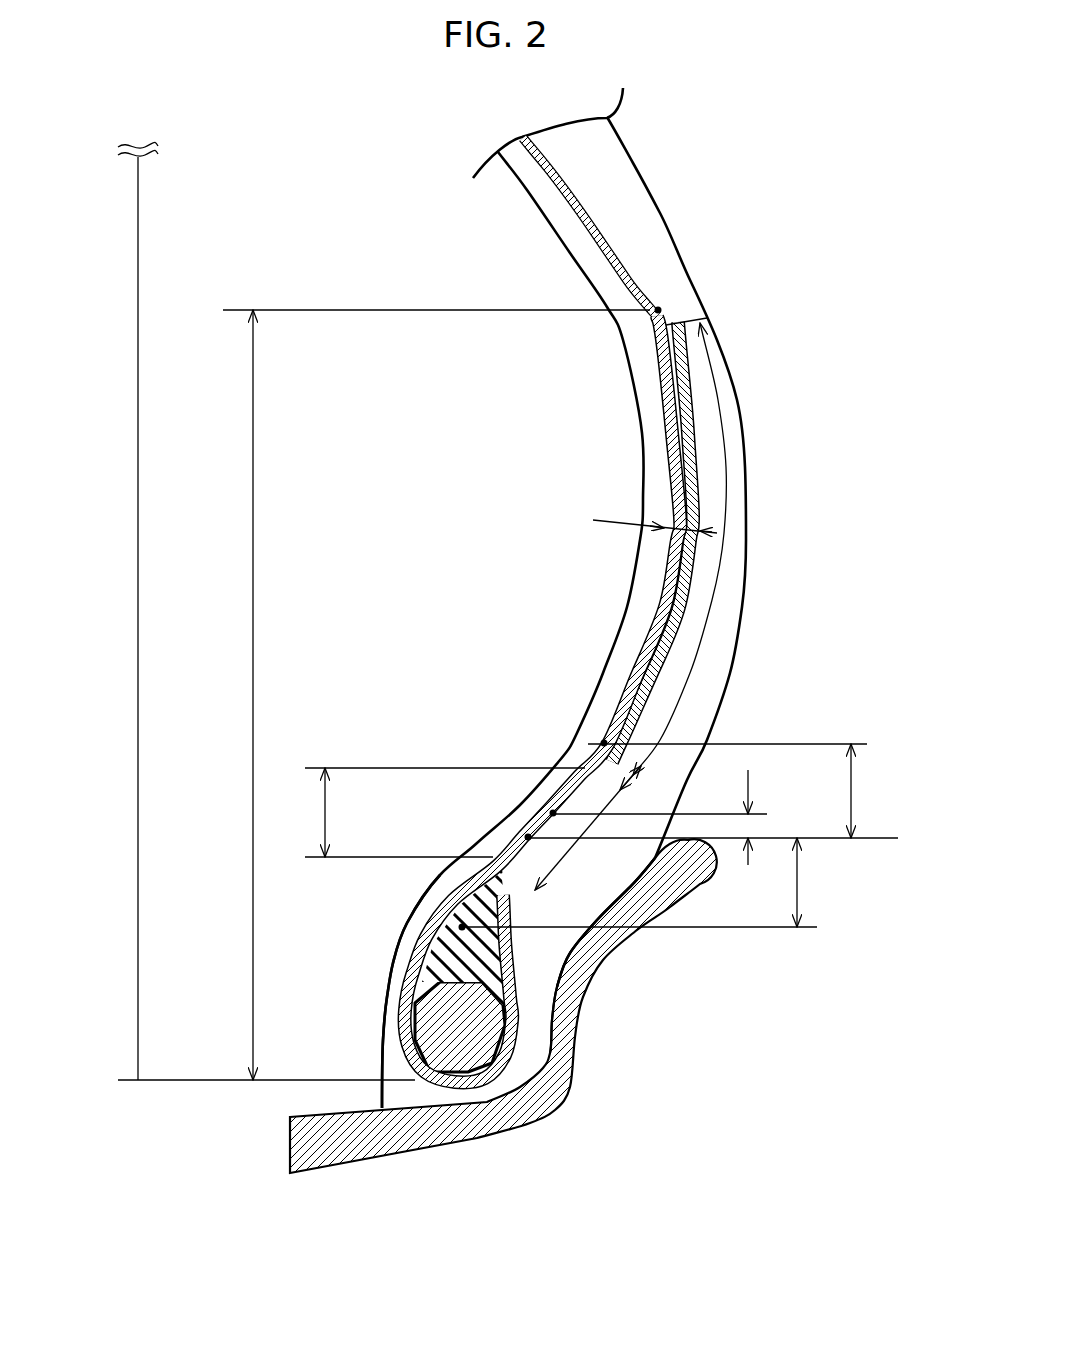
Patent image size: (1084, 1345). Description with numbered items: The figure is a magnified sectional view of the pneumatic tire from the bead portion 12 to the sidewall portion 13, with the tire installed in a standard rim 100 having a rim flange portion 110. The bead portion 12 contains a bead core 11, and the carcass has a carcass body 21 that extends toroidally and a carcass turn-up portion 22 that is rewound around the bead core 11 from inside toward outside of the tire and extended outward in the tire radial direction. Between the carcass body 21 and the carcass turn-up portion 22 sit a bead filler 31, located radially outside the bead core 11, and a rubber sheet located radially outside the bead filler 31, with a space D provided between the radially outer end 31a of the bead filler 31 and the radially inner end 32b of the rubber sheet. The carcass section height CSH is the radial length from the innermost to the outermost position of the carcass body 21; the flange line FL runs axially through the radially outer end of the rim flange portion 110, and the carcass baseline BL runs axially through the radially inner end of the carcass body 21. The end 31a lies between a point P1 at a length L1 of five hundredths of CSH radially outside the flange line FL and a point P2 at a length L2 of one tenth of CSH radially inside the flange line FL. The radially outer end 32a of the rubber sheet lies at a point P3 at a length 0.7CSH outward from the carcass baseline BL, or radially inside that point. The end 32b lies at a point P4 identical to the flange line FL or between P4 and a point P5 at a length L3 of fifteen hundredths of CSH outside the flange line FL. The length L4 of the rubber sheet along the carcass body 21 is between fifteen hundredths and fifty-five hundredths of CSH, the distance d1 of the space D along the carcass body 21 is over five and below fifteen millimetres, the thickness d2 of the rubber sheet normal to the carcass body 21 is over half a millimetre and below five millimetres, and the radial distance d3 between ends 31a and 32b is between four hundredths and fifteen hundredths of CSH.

The bead core 11 is at (450, 1047).
The bead portion 12 is at (375, 998).
The sidewall portion 13 is at (733, 550).
The carcass body 21 is at (403, 972).
The carcass turn-up portion 22 is at (513, 950).
The bead filler 31 is at (460, 902).
The end of the bead filler 31a is at (491, 866).
The end of the rubber sheet 32a is at (670, 318).
The end of the rubber sheet 32b is at (584, 765).
The standard rim 100 is at (360, 1153).
The rim flange portion 110 is at (565, 1047).
The point P1 is at (553, 813).
The point P2 is at (460, 927).
The point P3 is at (660, 308).
The point P4 is at (528, 838).
The point P5 is at (604, 743).
The space D is at (550, 793).
The distance d1 is at (583, 883).
The thickness of the rubber sheet d2 is at (655, 517).
The distance d3 is at (436, 812).
The length L1 is at (667, 817).
The length L2 is at (646, 882).
The length L3 is at (734, 791).
The length of the rubber sheet L4 is at (705, 603).
The carcass section height CSH is at (119, 611).
The length of 0.70 CSH 0.7CSH is at (402, 695).
The carcass baseline BL is at (248, 1082).
The flange line FL is at (728, 840).